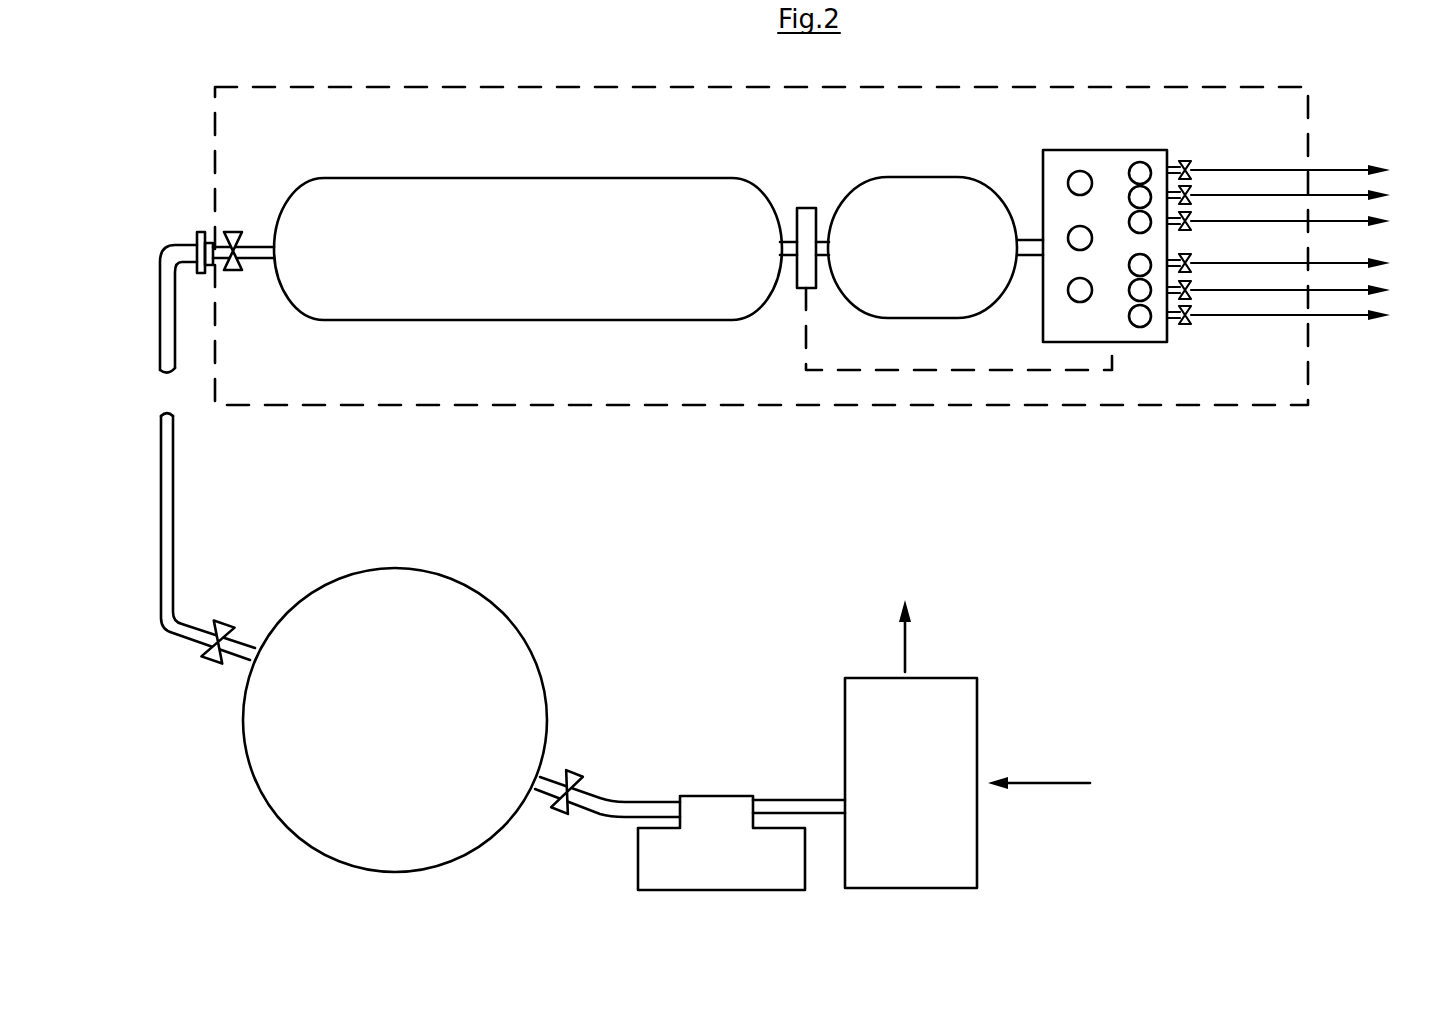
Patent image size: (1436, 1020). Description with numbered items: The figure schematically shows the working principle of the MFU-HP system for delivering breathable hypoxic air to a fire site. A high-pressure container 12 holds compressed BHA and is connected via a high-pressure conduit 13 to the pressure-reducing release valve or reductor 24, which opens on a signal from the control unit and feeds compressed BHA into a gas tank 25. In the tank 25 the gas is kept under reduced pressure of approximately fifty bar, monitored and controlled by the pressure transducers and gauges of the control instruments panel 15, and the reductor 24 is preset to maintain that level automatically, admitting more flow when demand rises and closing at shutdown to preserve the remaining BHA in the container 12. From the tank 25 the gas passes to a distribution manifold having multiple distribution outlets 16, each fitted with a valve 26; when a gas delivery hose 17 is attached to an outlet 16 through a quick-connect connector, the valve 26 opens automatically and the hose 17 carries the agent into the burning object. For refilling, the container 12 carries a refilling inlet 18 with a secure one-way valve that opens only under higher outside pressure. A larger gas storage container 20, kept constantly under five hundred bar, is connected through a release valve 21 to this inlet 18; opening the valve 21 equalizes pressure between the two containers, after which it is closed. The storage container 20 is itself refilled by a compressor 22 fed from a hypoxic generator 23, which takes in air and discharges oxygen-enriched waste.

The container 12 is at (528, 249).
The high-pressure conduit 13 is at (788, 256).
The control instruments panel 15 is at (1117, 325).
The distribution outlets 16 is at (1169, 166).
The gas delivery hoses 17 is at (1333, 220).
The refilling inlet 18 is at (238, 225).
The gas storage container 20 is at (461, 720).
The release valve 21 is at (218, 622).
The compressor 22 is at (741, 843).
The hypoxic generator 23 is at (1007, 744).
The pressure-reducing release valve or reductor 24 is at (806, 222).
The gas tank 25 is at (935, 247).
The valve 26 is at (1194, 166).